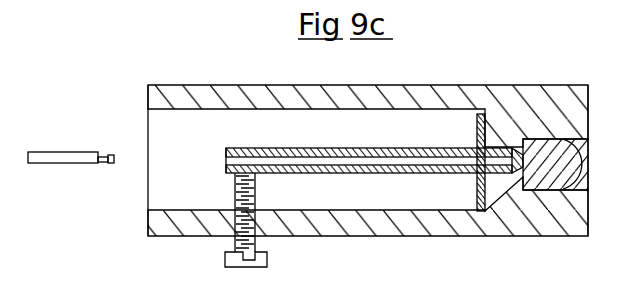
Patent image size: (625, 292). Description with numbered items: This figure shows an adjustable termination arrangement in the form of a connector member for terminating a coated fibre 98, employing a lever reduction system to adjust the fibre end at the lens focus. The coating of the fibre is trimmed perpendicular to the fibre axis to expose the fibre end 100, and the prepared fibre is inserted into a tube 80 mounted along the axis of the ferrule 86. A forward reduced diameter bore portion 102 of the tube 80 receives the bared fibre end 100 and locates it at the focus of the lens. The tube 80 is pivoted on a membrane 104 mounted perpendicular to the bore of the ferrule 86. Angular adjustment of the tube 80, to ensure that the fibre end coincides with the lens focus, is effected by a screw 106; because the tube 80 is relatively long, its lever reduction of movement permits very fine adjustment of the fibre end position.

The tube 80 is at (306, 148).
The ferrule 86 is at (384, 87).
The coated fibre 98 is at (50, 152).
The fibre end 100 is at (100, 166).
The forward reduced diameter bore portion 102 is at (522, 167).
The membrane 104 is at (488, 125).
The screw 106 is at (264, 253).